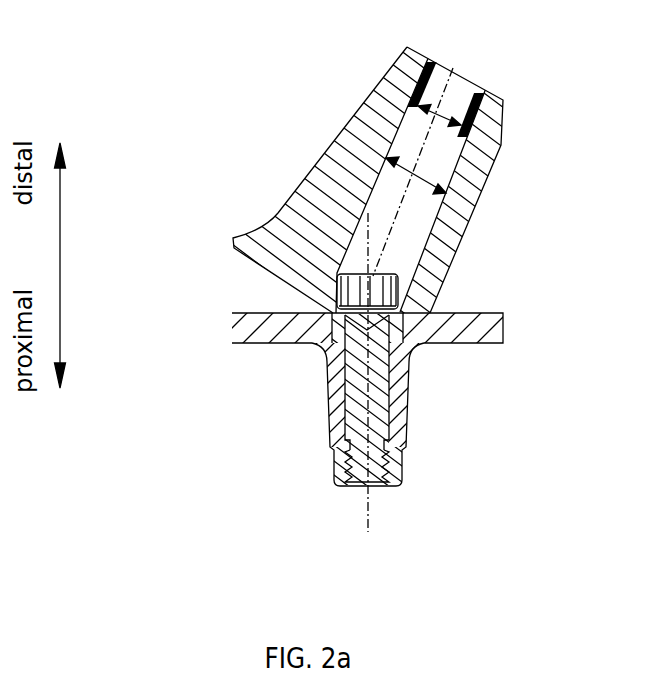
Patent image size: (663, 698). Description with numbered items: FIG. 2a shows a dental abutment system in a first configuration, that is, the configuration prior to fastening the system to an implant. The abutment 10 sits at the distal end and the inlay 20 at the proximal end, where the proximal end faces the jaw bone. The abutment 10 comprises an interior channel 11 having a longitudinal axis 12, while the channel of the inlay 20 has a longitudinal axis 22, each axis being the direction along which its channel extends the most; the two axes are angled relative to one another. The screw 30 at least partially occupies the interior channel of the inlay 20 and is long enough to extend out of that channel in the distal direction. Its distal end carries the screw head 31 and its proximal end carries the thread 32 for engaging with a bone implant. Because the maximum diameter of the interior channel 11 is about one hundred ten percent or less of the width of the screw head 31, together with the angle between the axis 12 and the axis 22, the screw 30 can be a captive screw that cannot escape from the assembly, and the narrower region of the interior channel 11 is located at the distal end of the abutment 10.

The abutment 10 is at (310, 168).
The interior channel 11 is at (426, 74).
The longitudinal axis 12 is at (440, 96).
The inlay 20 is at (503, 322).
The longitudinal axis 22 is at (367, 514).
The screw 30 is at (377, 398).
The screw head 31 is at (383, 273).
The thread 32 is at (377, 487).